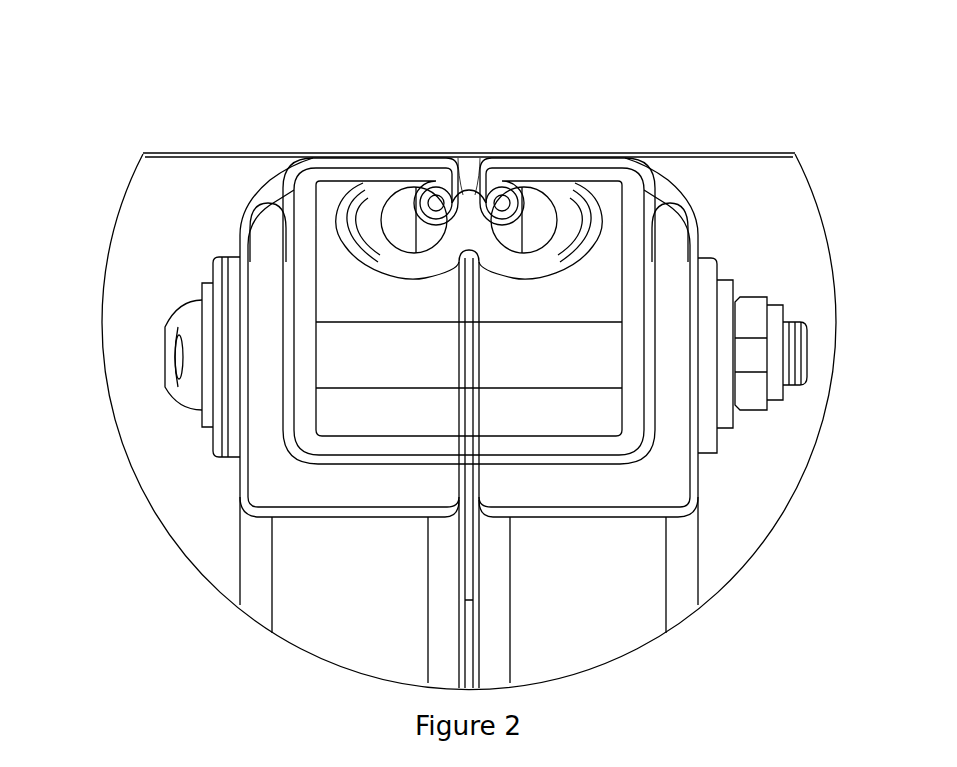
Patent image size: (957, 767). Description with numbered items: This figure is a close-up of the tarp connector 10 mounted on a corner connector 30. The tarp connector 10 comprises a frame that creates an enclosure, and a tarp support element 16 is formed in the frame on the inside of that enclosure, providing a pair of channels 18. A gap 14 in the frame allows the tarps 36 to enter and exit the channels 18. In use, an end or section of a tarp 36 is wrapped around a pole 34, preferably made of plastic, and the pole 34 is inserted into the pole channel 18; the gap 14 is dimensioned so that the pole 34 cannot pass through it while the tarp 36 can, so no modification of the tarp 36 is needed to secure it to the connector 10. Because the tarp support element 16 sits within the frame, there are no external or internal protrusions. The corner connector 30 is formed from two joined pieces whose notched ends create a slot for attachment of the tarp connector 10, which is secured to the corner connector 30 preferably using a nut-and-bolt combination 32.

The tarp connector 10 is at (352, 446).
The gap 14 is at (470, 164).
The tarp support element 16 is at (469, 208).
The channel 18 is at (398, 212).
The corner connector 30 is at (643, 472).
The nut-and-bolt combination 32 is at (752, 373).
The pole 34 is at (424, 198).
The tarp 36 is at (205, 188).